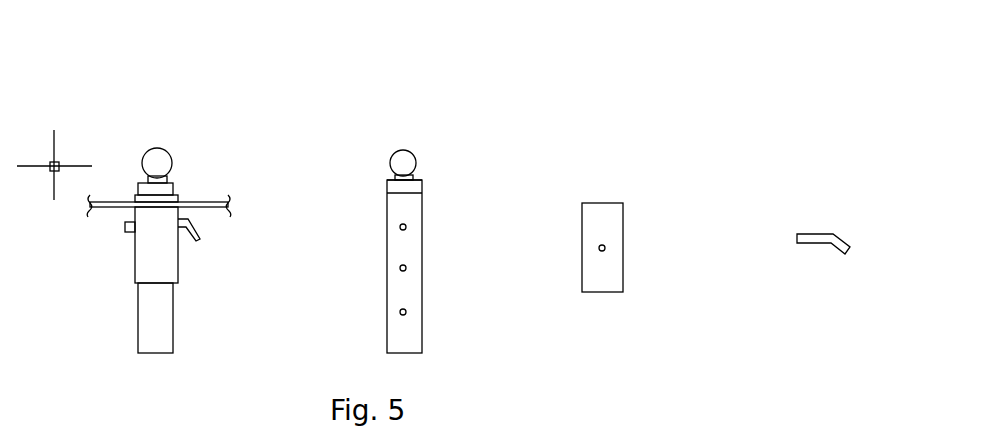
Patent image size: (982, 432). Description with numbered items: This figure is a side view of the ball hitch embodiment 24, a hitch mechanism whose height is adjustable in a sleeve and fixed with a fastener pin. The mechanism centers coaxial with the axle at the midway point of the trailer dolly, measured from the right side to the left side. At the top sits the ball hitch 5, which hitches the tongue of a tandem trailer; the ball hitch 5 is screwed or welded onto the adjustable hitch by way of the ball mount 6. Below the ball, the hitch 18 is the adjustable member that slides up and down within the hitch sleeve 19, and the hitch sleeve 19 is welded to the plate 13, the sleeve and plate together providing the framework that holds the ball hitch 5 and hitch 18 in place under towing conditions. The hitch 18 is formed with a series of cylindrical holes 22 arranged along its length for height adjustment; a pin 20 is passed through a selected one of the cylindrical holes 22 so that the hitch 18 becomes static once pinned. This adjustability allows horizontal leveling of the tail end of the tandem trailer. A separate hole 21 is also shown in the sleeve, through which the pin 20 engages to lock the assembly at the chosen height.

The ball hitch 5 is at (315, 130).
The ball mount 6 is at (338, 124).
The plate 13 is at (176, 167).
The hitch 18 is at (224, 283).
The hitch sleeve 19 is at (361, 245).
The pin 20 is at (550, 201).
The hole 21 is at (554, 275).
The cylindrical holes 22 is at (458, 277).
The embodiment 24 is at (198, 46).